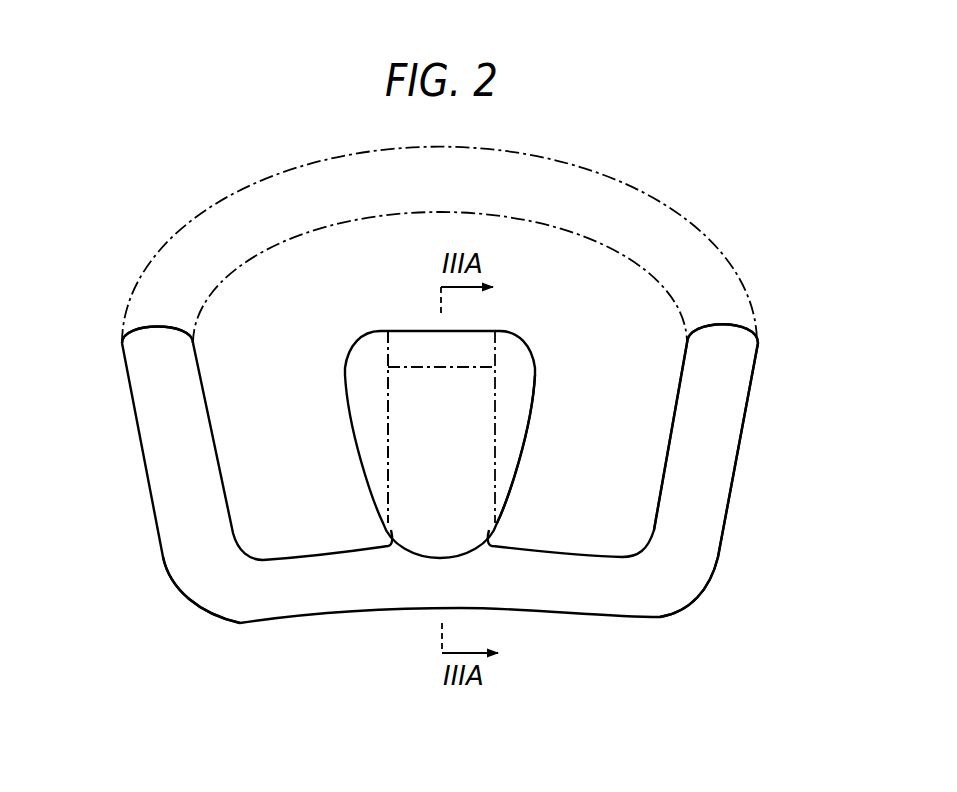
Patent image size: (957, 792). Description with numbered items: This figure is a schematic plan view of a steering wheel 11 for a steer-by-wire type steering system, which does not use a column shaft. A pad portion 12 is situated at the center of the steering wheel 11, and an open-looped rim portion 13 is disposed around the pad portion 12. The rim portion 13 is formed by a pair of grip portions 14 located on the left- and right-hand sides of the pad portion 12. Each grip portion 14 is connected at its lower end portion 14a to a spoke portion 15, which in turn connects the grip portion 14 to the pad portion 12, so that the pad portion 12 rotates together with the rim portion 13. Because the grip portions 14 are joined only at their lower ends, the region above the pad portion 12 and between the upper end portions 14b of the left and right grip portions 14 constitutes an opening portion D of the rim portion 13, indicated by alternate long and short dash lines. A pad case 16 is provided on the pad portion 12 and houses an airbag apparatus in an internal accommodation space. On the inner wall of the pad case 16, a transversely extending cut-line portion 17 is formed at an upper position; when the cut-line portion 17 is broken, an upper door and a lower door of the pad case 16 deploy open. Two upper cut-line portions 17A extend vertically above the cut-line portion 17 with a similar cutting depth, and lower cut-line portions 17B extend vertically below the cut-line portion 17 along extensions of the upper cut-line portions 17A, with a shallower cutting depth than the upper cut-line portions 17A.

The steering wheel 11 is at (748, 232).
The pad portion 12 is at (507, 402).
The rim portion 13 is at (775, 470).
The grip portion 14 is at (177, 383).
The lower end portion 14a is at (178, 557).
The upper end portion 14b is at (143, 350).
The spoke portion 15 is at (543, 595).
The pad case 16 is at (510, 462).
The cut-line portion 17 is at (415, 365).
The upper cut-line portion 17A is at (390, 350).
The lower cut-line portion 17B is at (388, 427).
The opening portion D is at (560, 161).